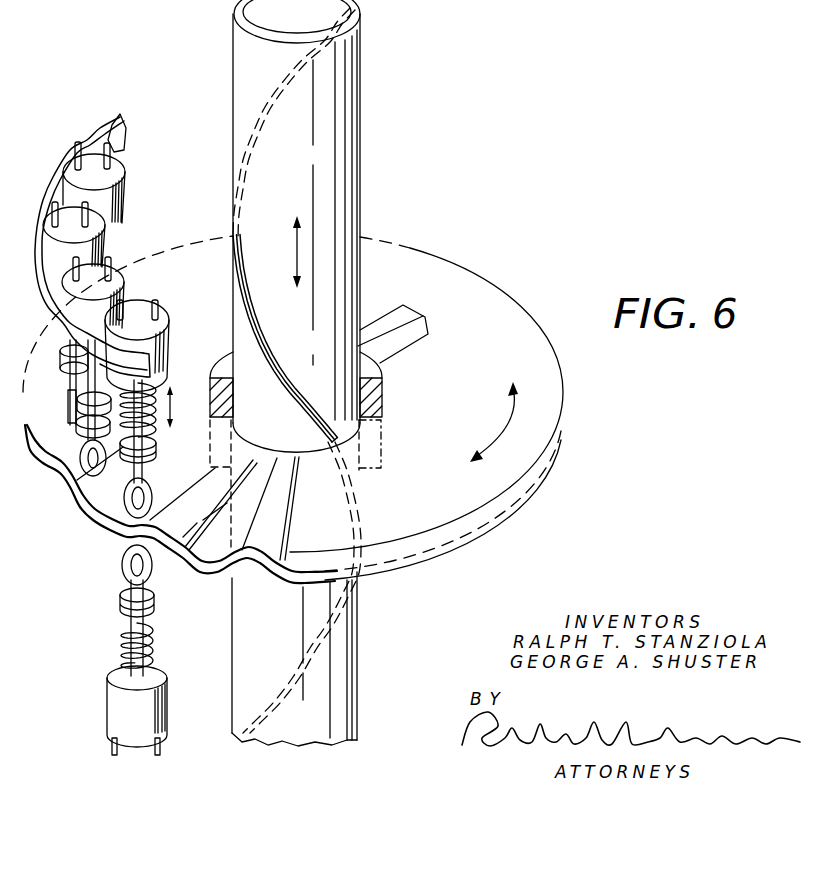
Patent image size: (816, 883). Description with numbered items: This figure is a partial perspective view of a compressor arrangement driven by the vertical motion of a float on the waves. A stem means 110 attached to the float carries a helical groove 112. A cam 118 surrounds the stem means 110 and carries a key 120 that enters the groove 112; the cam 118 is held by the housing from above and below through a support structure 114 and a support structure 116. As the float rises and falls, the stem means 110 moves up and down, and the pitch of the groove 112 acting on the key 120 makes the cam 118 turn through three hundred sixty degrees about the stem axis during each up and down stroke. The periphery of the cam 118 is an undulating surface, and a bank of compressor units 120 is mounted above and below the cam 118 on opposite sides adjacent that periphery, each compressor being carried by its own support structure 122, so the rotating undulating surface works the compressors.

The stem means 110 is at (343, 47).
The helical groove 112 is at (282, 385).
The support structure 114 is at (409, 310).
The support structure 116 is at (373, 461).
The cam 118 is at (461, 394).
The key 120 is at (180, 326).
The support structure 122 is at (112, 130).